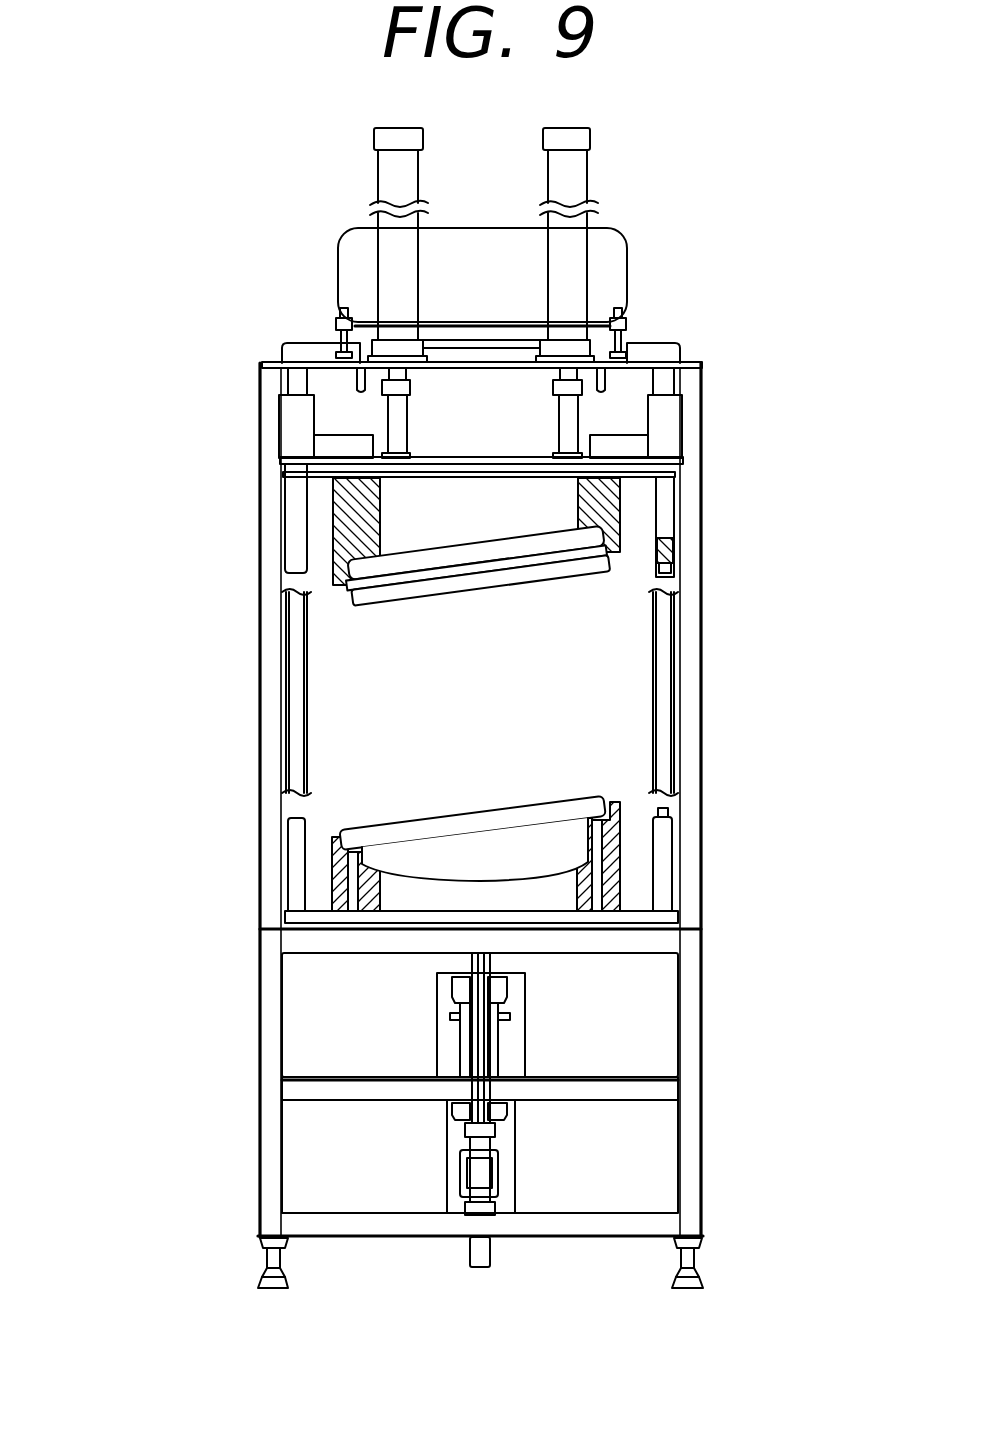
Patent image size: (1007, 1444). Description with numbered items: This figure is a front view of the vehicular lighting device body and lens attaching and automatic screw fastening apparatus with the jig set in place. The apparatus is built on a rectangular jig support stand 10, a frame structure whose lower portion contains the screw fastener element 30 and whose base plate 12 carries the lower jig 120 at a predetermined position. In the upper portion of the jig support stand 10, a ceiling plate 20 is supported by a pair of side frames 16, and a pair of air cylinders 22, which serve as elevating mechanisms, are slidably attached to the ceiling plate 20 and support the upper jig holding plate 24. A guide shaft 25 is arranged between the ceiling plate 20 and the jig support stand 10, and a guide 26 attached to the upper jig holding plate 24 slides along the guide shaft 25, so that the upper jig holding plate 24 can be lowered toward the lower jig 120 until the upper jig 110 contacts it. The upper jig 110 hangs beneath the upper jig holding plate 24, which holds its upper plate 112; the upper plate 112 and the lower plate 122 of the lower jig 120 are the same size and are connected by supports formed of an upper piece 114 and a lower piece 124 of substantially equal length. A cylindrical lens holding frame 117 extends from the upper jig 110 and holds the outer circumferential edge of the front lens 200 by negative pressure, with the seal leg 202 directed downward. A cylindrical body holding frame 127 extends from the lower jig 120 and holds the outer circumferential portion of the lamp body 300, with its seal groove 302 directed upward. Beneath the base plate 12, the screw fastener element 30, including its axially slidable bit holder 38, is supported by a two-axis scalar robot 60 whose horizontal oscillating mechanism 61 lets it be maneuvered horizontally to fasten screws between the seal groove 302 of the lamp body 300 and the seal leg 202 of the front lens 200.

The jig support stand 10 is at (238, 1009).
The base plate 12 is at (345, 928).
The side frames 16 is at (262, 656).
The ceiling plate 20 is at (650, 356).
The air cylinders 22 is at (388, 257).
The upper jig holding plate 24 is at (307, 456).
The guide shaft 25 is at (285, 710).
The guide 26 is at (288, 407).
The screw fastener element 30 is at (452, 1048).
The bit holder 38 is at (483, 987).
The two-axis scalar robot 60 is at (575, 1094).
The horizontal oscillating mechanism 61 is at (431, 1094).
The upper jig 110 is at (292, 587).
The upper plate 112 is at (295, 471).
The upper piece 114 is at (287, 521).
The lens holding frame 117 is at (613, 503).
The lower jig 120 is at (292, 800).
The lower plate 122 is at (295, 918).
The lower piece 124 is at (288, 868).
The body holding frame 127 is at (615, 838).
The front lens 200 is at (425, 535).
The seal leg 202 is at (520, 580).
The lamp body 300 is at (512, 894).
The seal groove 302 is at (550, 797).